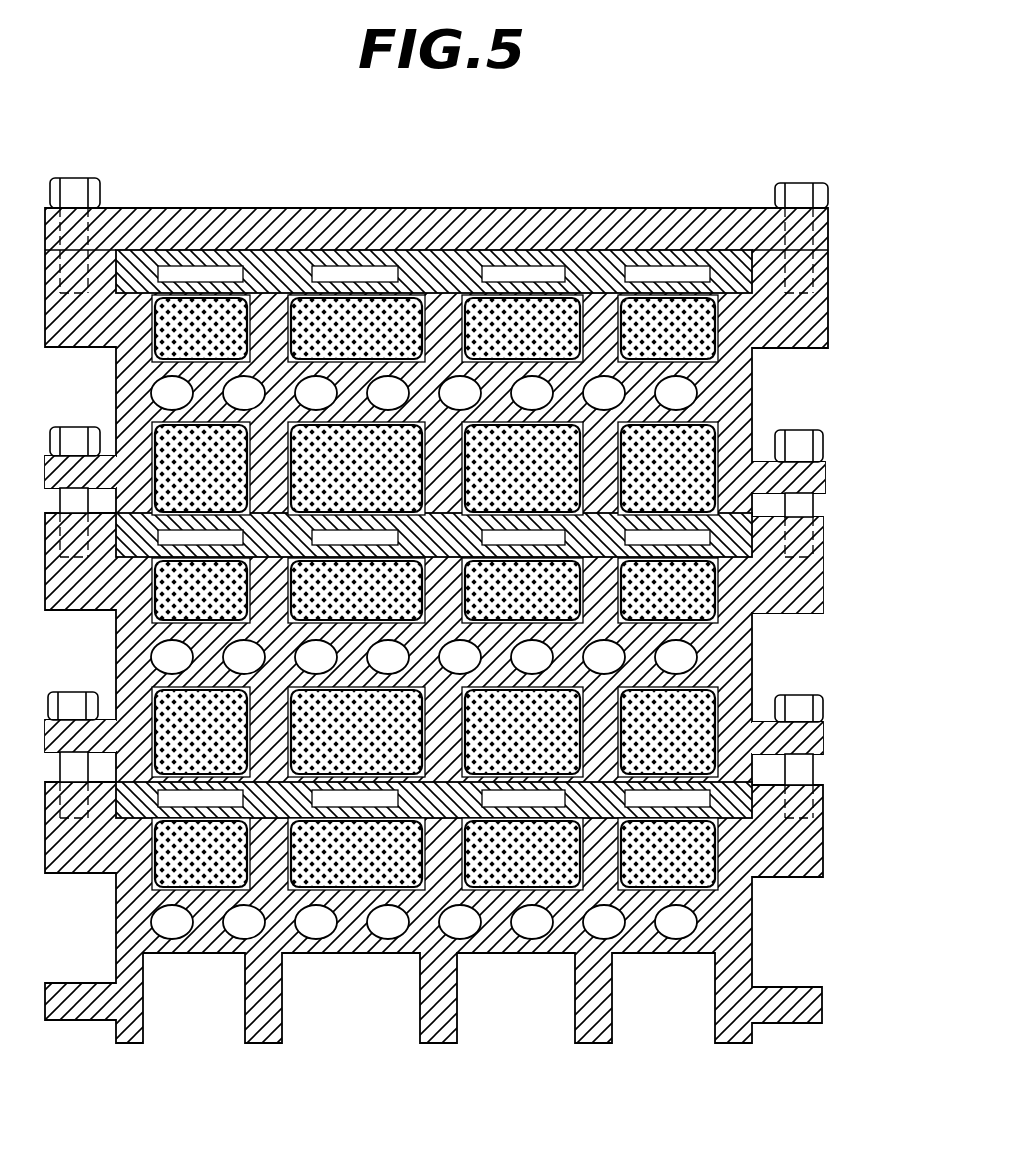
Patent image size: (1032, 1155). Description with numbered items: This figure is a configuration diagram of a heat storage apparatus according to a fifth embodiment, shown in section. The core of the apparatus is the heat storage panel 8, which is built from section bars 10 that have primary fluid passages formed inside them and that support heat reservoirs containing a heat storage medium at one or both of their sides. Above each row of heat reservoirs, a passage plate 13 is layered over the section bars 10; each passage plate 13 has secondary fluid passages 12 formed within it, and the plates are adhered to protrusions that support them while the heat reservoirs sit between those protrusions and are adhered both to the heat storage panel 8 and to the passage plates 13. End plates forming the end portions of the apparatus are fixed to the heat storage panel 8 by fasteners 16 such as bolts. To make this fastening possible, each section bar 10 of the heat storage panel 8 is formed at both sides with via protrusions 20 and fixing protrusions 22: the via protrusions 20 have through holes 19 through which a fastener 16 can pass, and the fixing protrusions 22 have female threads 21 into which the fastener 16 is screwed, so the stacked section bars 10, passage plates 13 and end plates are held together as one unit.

The heat storage panel 8 is at (833, 295).
The section bar 10 is at (728, 392).
The secondary fluid passage 12 is at (352, 268).
The passage plate 13 is at (270, 258).
The fastener 16 is at (817, 445).
The through hole 19 is at (810, 488).
The via protrusion 20 is at (825, 478).
The female thread 21 is at (810, 543).
The fixing protrusion 22 is at (825, 587).